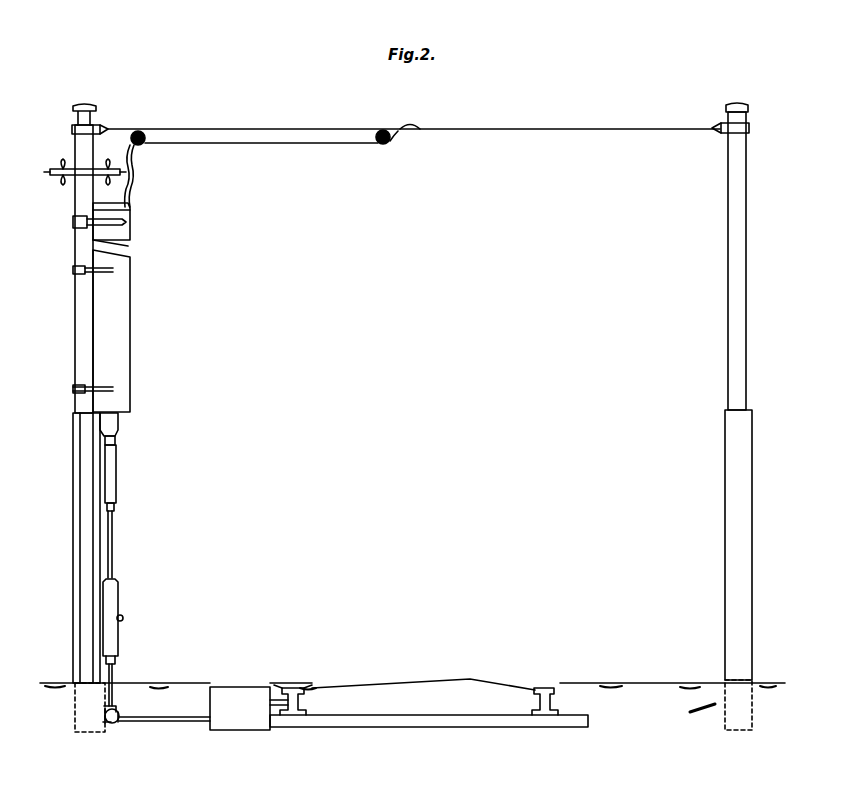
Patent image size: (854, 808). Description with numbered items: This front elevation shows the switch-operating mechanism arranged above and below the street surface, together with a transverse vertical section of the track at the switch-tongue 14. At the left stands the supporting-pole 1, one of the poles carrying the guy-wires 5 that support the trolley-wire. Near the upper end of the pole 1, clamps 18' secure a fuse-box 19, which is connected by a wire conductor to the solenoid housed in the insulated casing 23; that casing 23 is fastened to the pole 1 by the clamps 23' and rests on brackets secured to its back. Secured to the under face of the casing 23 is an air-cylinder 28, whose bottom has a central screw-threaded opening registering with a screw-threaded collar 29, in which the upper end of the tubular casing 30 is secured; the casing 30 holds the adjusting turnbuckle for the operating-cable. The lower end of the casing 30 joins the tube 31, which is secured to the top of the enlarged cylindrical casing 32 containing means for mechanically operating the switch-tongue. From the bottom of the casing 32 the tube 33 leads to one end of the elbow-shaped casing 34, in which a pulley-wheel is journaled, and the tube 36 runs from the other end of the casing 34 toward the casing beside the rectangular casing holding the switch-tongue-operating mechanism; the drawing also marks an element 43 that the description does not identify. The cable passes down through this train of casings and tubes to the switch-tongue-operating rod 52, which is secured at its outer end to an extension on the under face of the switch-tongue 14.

The supporting-pole 1 is at (85, 393).
The guy-wires 5 is at (557, 131).
The clamps 18' is at (82, 224).
The fuse-box 19 is at (118, 230).
The insulated casing 23 is at (111, 331).
The clamps 23' is at (75, 327).
The air-cylinder 28 is at (113, 424).
The screw-threaded collar 29 is at (115, 442).
The tubular casing 30 is at (116, 470).
The tube 31 is at (112, 538).
The enlarged cylindrical casing 32 is at (118, 591).
The tube 33 is at (112, 667).
The elbow-shaped casing 34 is at (113, 724).
The tube 36 is at (175, 722).
The box 43 is at (240, 708).
The switch-tongue 14 is at (300, 690).
The switch-tongue-operating rod 52 is at (287, 688).